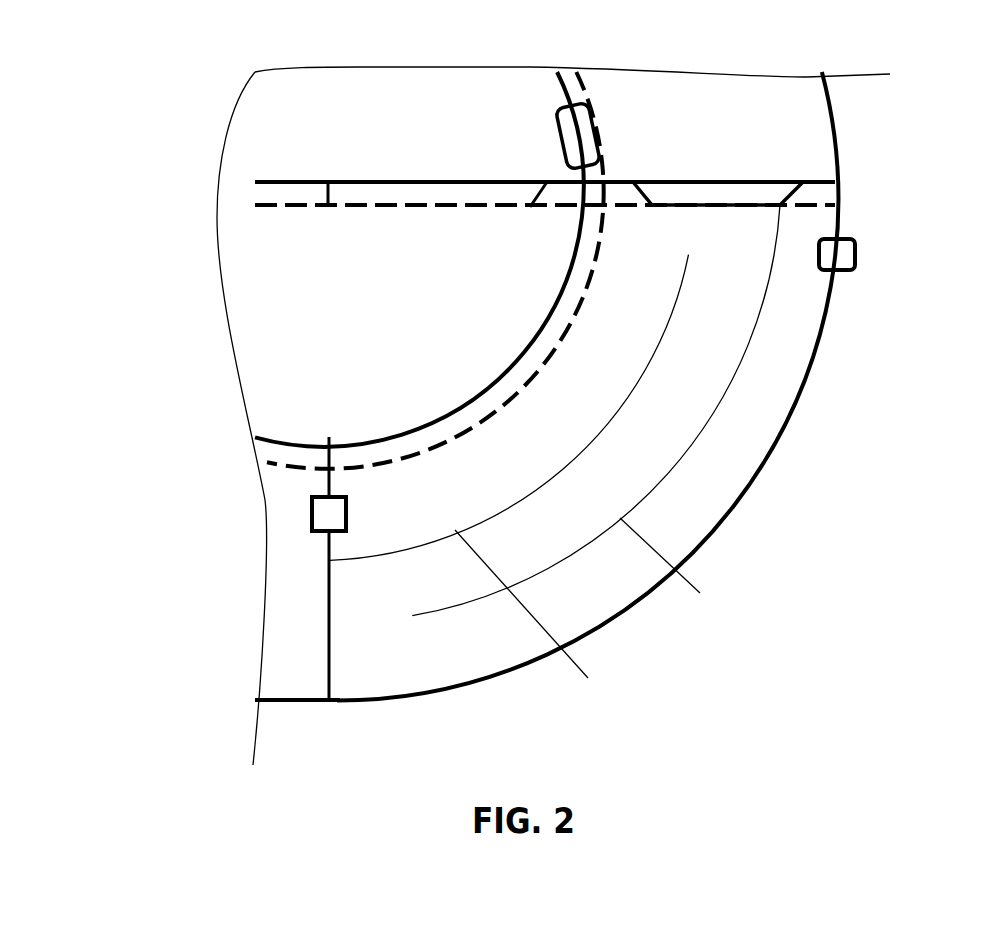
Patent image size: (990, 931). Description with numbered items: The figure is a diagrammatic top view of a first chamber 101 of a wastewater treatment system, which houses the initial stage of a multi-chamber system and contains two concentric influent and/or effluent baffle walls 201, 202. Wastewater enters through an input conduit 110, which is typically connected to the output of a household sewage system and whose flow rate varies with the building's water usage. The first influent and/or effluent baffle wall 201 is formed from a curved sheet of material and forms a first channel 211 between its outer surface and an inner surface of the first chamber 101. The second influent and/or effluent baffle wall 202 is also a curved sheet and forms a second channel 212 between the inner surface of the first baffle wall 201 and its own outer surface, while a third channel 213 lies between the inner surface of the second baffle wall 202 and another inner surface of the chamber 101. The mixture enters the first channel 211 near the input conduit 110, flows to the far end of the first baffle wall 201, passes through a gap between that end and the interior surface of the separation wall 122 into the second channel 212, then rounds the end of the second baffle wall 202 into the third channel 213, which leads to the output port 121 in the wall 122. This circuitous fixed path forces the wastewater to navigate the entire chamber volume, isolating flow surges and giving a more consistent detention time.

The first chamber 101 is at (730, 510).
The input conduit 110 is at (837, 250).
The port 121 is at (308, 523).
The wall 122 is at (322, 600).
The first influent and/or effluent baffle wall 201 is at (674, 568).
The second influent and/or effluent baffle wall 202 is at (537, 618).
The first channel 211 is at (747, 435).
The second channel 212 is at (697, 368).
The third channel 213 is at (647, 302).